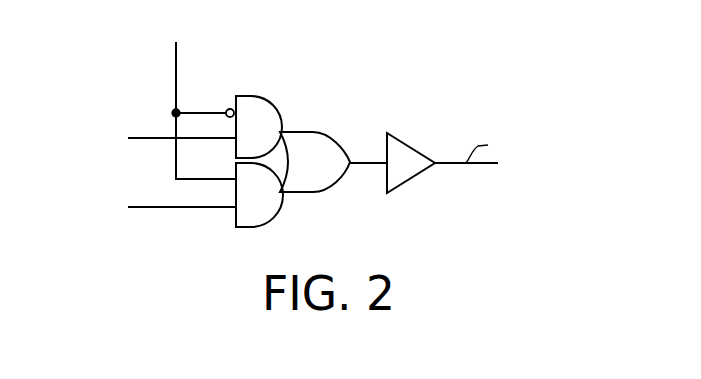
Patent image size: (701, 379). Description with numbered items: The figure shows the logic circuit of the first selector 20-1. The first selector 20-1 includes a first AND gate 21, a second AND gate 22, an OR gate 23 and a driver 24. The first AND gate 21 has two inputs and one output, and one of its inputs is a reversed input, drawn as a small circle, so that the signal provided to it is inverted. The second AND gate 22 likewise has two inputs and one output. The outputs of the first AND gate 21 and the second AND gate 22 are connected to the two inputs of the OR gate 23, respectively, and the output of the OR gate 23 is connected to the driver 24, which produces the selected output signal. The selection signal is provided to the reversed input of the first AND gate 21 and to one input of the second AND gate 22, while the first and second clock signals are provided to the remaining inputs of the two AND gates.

The first selector 20-1 is at (445, 72).
The first AND gate 21 is at (262, 98).
The second AND gate 22 is at (268, 214).
The OR gate 23 is at (320, 132).
The driver 24 is at (393, 193).